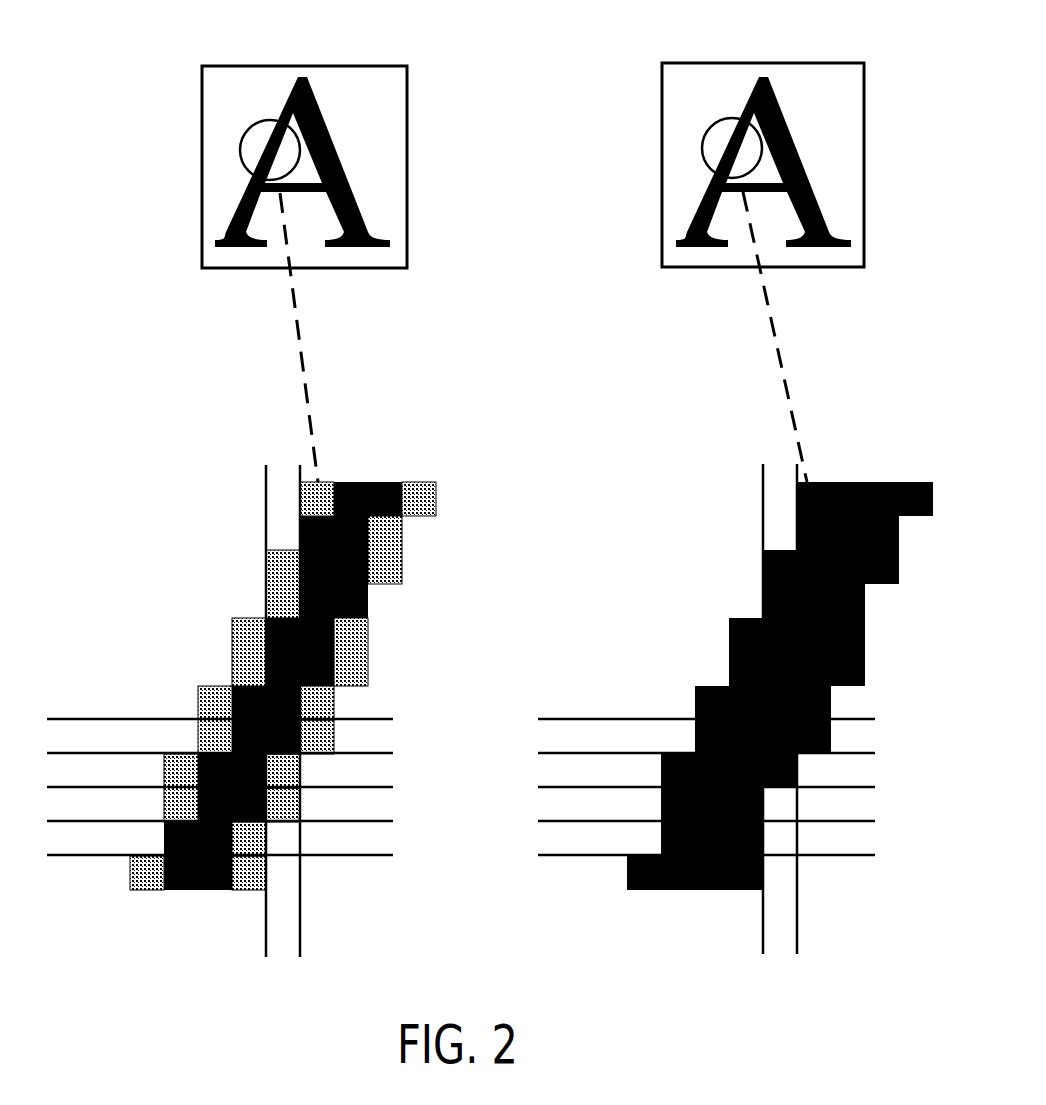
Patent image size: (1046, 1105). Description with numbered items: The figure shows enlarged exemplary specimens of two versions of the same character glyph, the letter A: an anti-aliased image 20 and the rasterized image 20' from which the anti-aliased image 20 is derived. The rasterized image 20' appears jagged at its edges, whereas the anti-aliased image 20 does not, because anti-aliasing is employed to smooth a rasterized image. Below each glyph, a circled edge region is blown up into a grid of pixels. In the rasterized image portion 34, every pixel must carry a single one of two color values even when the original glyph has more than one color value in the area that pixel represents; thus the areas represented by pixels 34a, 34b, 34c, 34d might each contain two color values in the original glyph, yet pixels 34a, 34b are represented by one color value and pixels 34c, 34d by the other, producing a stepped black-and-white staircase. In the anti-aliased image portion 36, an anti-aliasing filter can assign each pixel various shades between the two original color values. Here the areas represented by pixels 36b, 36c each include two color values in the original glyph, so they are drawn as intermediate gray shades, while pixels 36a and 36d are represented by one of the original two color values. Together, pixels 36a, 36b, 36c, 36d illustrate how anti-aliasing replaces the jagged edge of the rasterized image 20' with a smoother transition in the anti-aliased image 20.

The anti-aliased image 20 is at (304, 134).
The rasterized image 20' is at (763, 133).
The anti-aliased image portion 36 is at (256, 121).
The rasterized image portion 34 is at (714, 125).
The pixel 36a is at (333, 737).
The pixel 36b is at (287, 772).
The pixel 36c is at (282, 805).
The pixel 36d is at (283, 835).
The pixel 34a is at (830, 739).
The pixel 34b is at (796, 772).
The pixel 34c is at (782, 805).
The pixel 34d is at (782, 836).